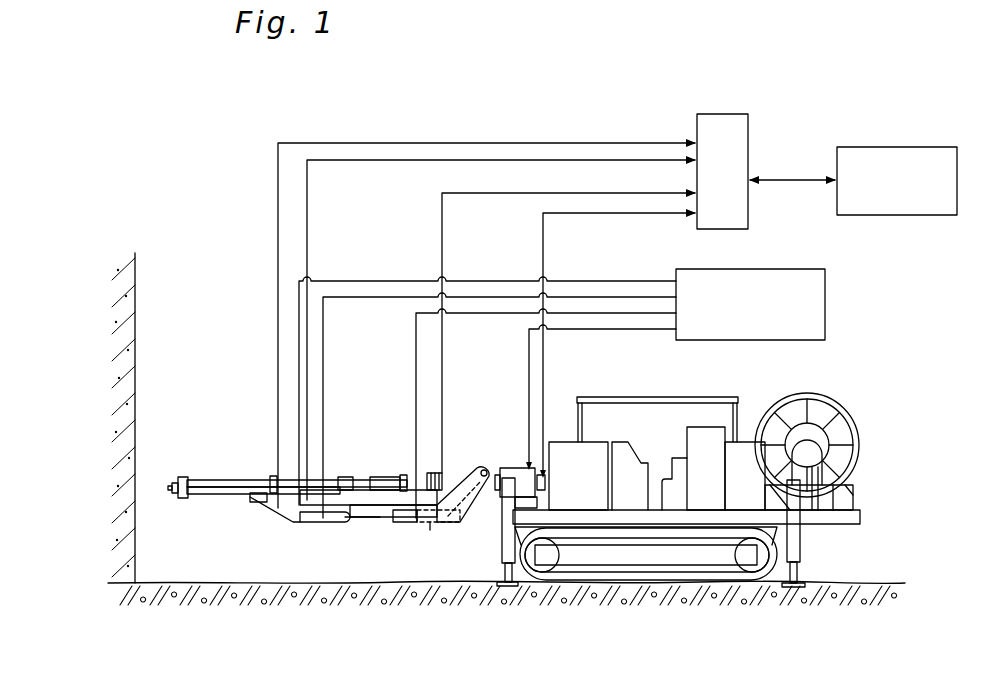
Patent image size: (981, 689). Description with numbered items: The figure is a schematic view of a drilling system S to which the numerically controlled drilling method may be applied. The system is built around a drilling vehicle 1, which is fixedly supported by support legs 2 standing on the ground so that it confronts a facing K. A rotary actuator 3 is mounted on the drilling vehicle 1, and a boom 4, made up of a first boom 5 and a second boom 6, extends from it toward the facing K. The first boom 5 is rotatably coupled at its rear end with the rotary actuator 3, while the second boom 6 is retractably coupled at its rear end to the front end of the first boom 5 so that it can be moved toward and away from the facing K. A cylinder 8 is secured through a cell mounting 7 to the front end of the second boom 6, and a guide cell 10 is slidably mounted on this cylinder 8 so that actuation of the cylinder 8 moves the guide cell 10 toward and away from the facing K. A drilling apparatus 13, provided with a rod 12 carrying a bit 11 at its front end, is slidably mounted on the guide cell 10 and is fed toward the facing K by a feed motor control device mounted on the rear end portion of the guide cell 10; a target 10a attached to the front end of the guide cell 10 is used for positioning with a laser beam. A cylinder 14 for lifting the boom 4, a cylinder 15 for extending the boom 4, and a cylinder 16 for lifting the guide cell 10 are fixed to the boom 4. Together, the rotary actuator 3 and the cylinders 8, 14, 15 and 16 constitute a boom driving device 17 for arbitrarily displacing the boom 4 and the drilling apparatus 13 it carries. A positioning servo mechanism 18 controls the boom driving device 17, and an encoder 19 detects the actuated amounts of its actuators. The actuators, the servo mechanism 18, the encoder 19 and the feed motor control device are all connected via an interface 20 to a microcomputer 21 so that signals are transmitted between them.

The drilling vehicle 1 is at (860, 517).
The support legs 2 is at (800, 548).
The rotary actuator 3 is at (515, 465).
The boom 4 is at (392, 524).
The first boom 5 is at (467, 508).
The second boom 6 is at (372, 508).
The cell mounting 7 is at (275, 512).
The cylinder 8 is at (272, 476).
The guide cell 10 is at (218, 496).
The target 10a is at (170, 490).
The bit 11 is at (180, 477).
The rod 12 is at (222, 480).
The drilling apparatus 13 is at (378, 478).
The cylinder 14 is at (465, 515).
The cylinder 15 is at (410, 525).
The cylinder 16 is at (315, 522).
The boom driving device 17 is at (430, 532).
The positioning servo mechanism 18 is at (825, 290).
The encoder 19 is at (546, 483).
The interface 20 is at (715, 114).
The microcomputer 21 is at (887, 147).
The facing K is at (135, 343).
The drilling system S is at (822, 366).